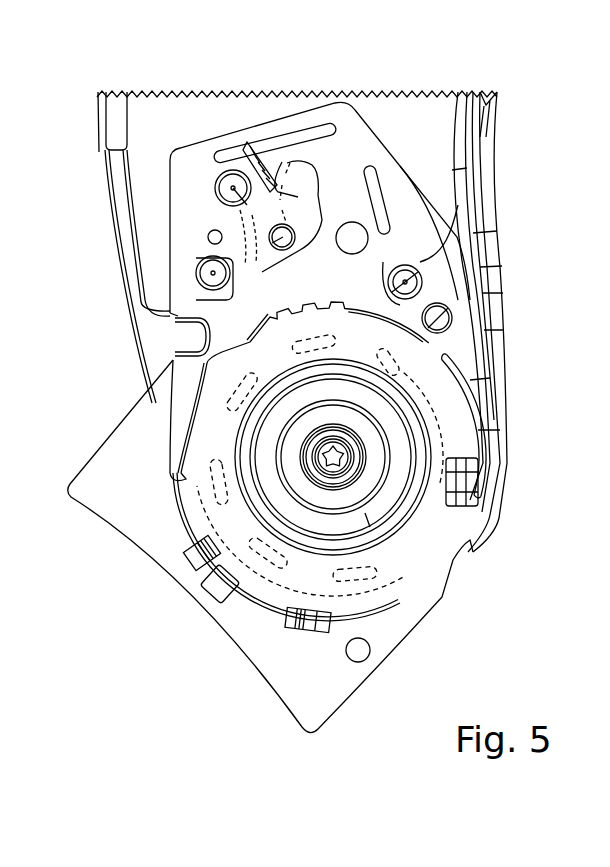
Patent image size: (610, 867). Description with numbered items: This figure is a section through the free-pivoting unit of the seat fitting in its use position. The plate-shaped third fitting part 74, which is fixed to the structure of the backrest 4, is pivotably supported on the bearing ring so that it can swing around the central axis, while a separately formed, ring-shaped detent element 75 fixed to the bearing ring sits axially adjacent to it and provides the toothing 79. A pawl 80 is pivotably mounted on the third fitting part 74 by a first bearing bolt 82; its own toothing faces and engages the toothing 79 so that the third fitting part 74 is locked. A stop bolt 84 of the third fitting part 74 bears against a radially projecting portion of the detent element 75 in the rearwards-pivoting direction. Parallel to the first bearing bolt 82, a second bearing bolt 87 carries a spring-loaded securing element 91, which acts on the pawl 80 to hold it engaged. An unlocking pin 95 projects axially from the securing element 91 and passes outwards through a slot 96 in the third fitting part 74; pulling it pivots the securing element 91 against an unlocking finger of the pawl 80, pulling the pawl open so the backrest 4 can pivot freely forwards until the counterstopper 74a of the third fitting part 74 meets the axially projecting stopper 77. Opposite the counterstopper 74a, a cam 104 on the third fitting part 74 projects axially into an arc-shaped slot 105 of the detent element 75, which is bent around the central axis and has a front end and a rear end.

The backrest 4 is at (438, 143).
The pawl 80 is at (385, 246).
The first bearing bolt 82 is at (420, 275).
The stop bolt 84 is at (445, 315).
The detent element 75 is at (428, 352).
The slot 105 is at (462, 395).
The cam 104 is at (478, 478).
The slot 96 is at (295, 197).
The second bearing bolt 87 is at (262, 186).
The unlocking pin 95 is at (270, 240).
The securing element 91 is at (177, 307).
The third fitting part 74 is at (173, 320).
The toothing 79 is at (206, 364).
The counterstopper 74a is at (180, 478).
The stopper 77 is at (213, 615).